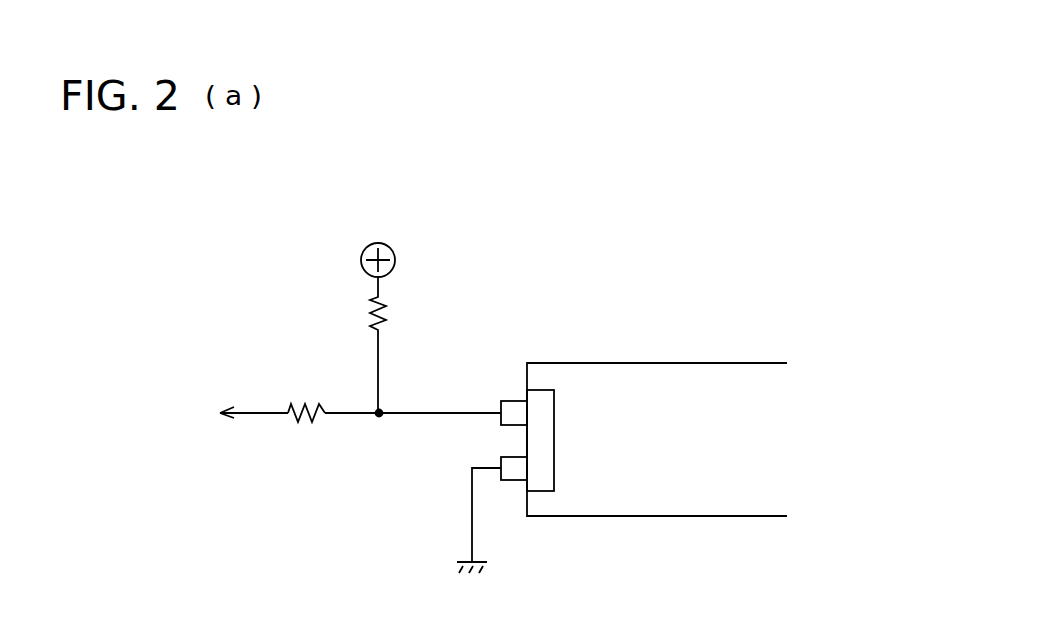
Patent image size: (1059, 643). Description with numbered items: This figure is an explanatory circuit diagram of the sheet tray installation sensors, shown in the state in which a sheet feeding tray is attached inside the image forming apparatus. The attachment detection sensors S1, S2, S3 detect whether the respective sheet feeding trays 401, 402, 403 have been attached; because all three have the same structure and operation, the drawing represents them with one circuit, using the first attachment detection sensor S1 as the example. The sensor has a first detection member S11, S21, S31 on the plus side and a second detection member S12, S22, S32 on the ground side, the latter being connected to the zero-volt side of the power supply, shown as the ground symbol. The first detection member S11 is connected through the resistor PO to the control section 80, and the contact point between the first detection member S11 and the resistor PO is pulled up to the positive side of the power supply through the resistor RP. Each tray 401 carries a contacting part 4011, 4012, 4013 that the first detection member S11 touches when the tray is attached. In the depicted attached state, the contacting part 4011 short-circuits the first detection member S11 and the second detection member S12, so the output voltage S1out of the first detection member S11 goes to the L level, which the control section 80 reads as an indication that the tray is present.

The control section 80 is at (139, 415).
The first sheet feeding tray 401 is at (668, 383).
The second sheet feeding tray 402 is at (668, 383).
The third sheet feeding tray 403 is at (735, 363).
The contacting part 4011 is at (687, 476).
The contacting part 4012 is at (687, 476).
The contacting part 4013 is at (554, 440).
The first attachment detection sensor S1 is at (569, 431).
The second attachment detection sensor S2 is at (569, 431).
The third attachment detection sensor S3 is at (410, 570).
The first detection member S11 is at (570, 360).
The first detection member S21 is at (570, 360).
The first detection member S31 is at (513, 401).
The second detection member S12 is at (590, 534).
The second detection member S22 is at (590, 534).
The second detection member S32 is at (515, 481).
The resistor PO is at (310, 419).
The resistor RP is at (388, 328).
The output voltage S1out is at (264, 413).
The L level L is at (250, 415).